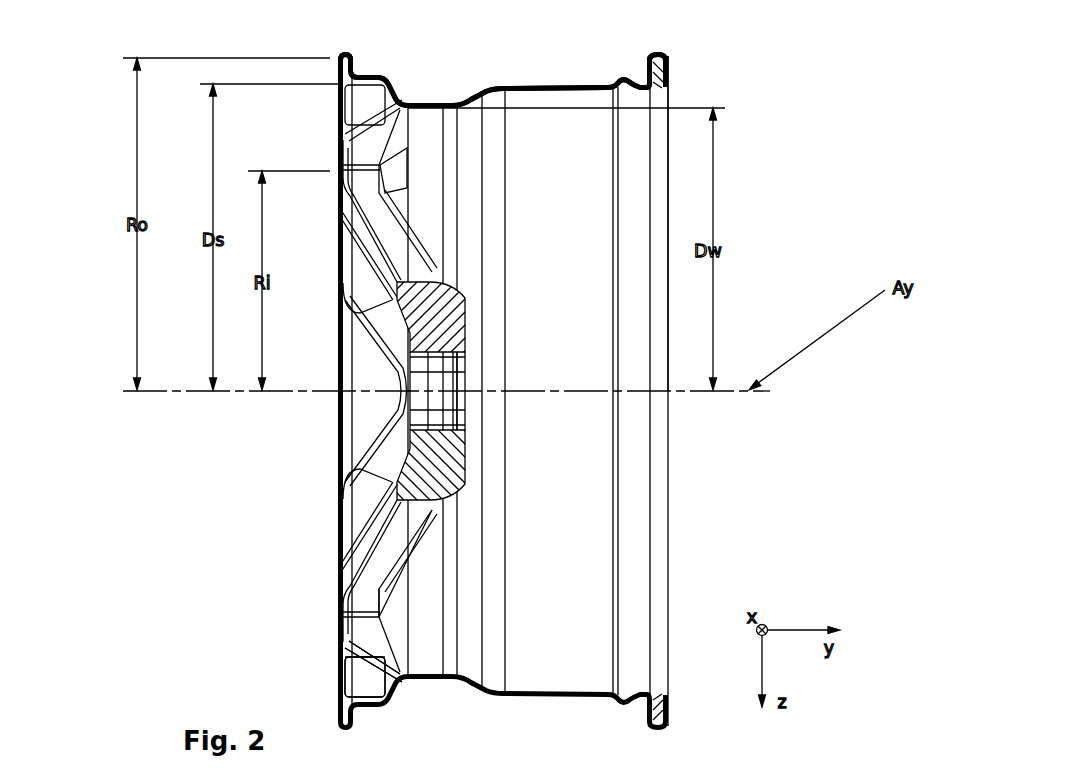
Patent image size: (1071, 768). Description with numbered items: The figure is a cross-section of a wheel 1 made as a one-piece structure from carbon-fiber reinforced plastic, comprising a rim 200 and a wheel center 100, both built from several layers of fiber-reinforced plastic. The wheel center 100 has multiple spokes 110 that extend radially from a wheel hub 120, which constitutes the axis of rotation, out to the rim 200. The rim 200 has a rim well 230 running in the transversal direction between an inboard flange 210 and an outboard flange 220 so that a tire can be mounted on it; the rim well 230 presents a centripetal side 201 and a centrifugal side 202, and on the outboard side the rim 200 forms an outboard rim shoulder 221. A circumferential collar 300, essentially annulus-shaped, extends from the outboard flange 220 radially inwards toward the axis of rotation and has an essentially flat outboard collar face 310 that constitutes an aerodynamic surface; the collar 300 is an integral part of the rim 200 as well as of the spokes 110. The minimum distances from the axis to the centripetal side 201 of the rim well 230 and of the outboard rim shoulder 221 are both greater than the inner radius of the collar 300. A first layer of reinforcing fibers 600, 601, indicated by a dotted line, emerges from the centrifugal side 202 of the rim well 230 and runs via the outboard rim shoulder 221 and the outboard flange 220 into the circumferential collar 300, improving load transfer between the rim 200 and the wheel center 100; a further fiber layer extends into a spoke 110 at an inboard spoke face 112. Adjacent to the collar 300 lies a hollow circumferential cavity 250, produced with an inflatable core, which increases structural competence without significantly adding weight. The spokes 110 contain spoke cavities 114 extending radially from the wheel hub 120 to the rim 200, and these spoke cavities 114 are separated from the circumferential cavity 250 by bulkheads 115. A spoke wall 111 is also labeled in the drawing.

The wheel 1 is at (485, 386).
The wheel center 100 is at (483, 386).
The spokes 110 is at (378, 543).
The spoke wall 111 is at (408, 567).
The inboard spoke face 112 is at (405, 565).
The spoke cavities 114 is at (398, 249).
The bulkheads 115 is at (402, 120).
The wheel hub 120 is at (430, 445).
The rim 200 is at (571, 375).
The centripetal side 201 is at (576, 681).
The centrifugal side 202 is at (540, 78).
The inboard flange 210 is at (668, 58).
The outboard flange 220 is at (340, 52).
The outboard rim shoulder 221 is at (367, 73).
The rim well 230 is at (519, 78).
The circumferential cavity 250 is at (375, 692).
The circumferential collar 300 is at (330, 681).
The outboard collar face 310 is at (345, 658).
The first layer of reinforcing fibers 600 is at (397, 102).
The first layer of reinforcing fibers 601 is at (399, 102).